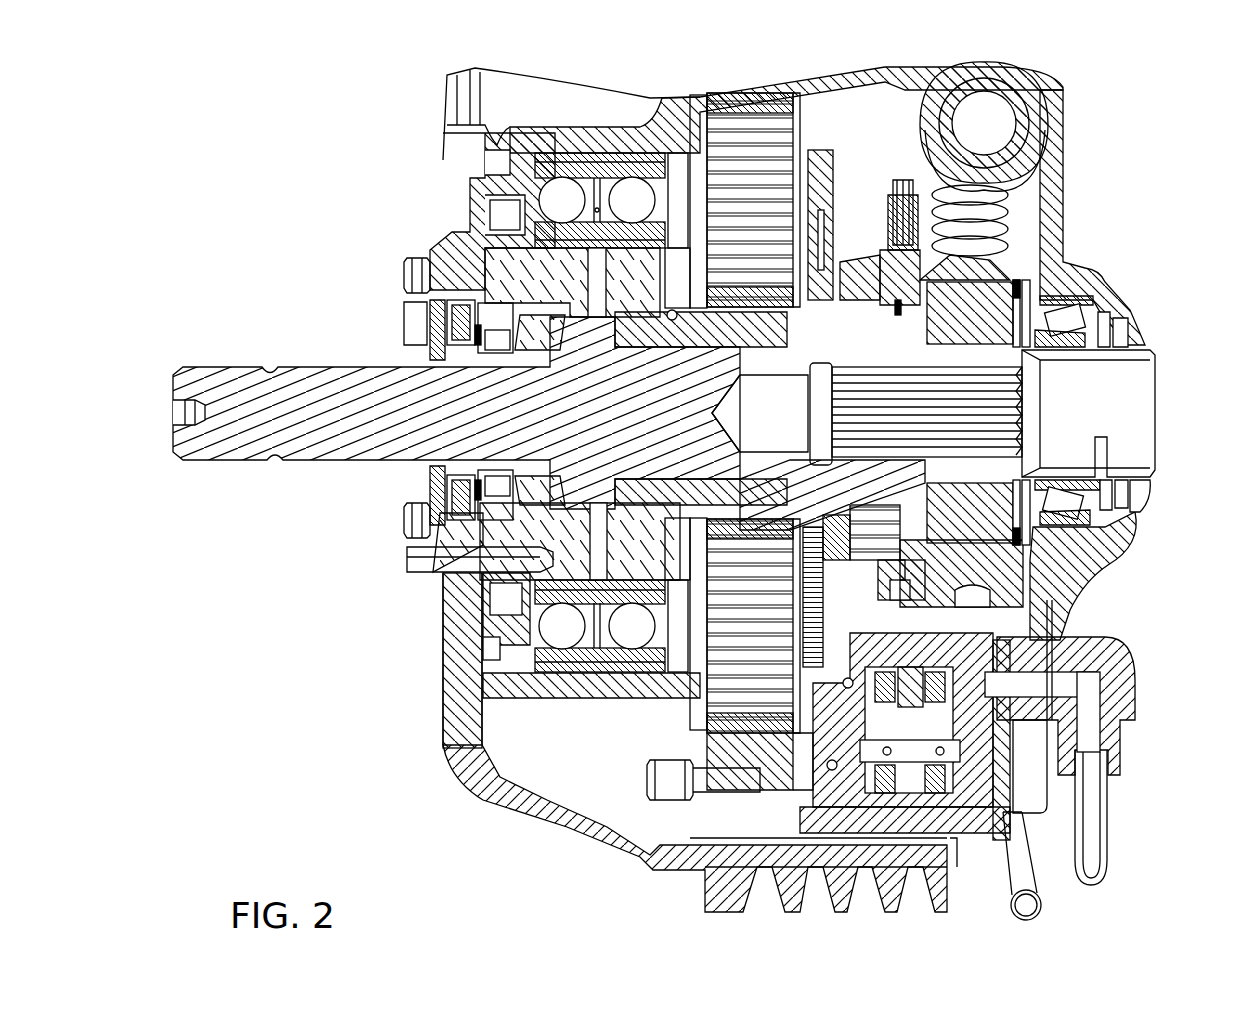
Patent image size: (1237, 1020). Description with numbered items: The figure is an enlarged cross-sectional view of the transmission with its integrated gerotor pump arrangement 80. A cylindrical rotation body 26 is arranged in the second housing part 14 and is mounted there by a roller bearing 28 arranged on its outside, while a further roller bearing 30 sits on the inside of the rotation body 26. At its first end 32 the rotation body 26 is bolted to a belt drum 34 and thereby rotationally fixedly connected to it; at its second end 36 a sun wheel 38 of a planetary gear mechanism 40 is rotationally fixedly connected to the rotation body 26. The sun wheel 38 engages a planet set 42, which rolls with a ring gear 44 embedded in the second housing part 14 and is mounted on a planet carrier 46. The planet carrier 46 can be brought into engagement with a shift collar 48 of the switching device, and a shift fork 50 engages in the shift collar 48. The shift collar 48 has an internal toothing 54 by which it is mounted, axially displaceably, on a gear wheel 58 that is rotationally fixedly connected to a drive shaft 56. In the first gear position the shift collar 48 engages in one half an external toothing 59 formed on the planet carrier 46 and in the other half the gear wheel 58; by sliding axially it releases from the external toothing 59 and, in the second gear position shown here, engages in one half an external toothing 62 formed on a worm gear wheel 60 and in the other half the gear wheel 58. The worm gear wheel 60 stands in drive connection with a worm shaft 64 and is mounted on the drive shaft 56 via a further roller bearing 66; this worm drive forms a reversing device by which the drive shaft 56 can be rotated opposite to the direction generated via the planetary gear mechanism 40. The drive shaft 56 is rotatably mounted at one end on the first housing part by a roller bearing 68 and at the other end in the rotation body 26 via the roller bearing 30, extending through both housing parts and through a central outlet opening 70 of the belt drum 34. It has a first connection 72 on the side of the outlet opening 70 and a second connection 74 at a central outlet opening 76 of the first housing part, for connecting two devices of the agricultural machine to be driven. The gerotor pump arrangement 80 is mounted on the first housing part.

The second housing part 14 is at (600, 683).
The cylindrical rotation body 26 is at (565, 610).
The roller bearing 28 is at (558, 163).
The further roller bearing 30 is at (543, 493).
The first end 32 is at (420, 268).
The belt drum 34 is at (445, 228).
The second end 36 is at (655, 343).
The sun wheel 38 is at (745, 330).
The planetary gear mechanism 40 is at (753, 197).
The planet set 42 is at (743, 627).
The ring gear 44 is at (743, 740).
The planet carrier 46 is at (822, 645).
The shift collar 48 is at (900, 287).
The shift fork 50 is at (897, 240).
The internal toothing 54 is at (862, 300).
The drive shaft 56 is at (360, 418).
The gear wheel 58 is at (877, 520).
The external toothing 59 is at (843, 260).
The worm gear wheel 60 is at (1030, 268).
The external toothing 62 is at (987, 305).
The worm shaft 64 is at (1017, 270).
The further roller bearing 66 is at (975, 310).
The roller bearing 68 is at (1073, 500).
The central outlet opening 70 is at (427, 302).
The first connection 72 is at (226, 367).
The second connection 74 is at (1105, 475).
The central outlet opening 76 is at (1147, 487).
The gerotor pump arrangement 80 is at (878, 820).